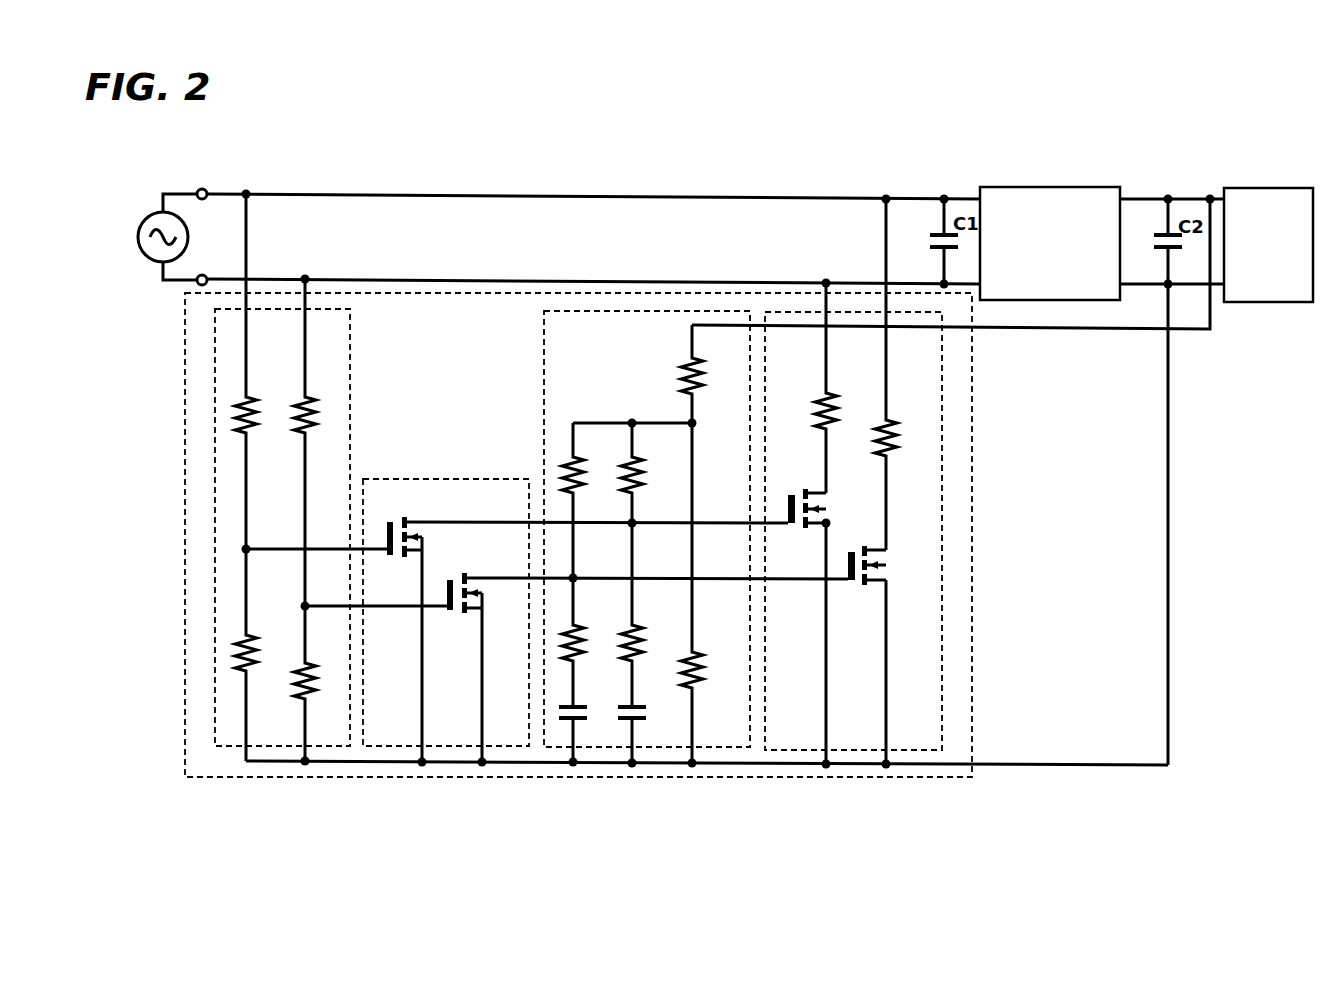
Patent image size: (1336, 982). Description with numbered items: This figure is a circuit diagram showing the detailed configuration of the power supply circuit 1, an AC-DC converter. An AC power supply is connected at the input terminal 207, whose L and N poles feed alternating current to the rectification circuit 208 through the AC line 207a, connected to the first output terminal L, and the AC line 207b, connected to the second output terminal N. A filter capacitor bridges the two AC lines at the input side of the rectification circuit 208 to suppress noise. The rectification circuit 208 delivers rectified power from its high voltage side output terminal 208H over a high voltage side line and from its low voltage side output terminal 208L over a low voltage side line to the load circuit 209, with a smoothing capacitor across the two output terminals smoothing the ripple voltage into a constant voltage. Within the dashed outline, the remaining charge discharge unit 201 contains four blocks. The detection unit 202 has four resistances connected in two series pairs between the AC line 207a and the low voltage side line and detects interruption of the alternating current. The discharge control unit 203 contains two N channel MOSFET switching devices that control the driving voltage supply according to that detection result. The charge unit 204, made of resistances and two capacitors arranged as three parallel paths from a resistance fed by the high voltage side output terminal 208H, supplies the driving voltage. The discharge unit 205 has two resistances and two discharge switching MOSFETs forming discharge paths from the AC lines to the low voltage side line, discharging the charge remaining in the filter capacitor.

The power supply circuit 1 is at (148, 160).
The remaining charge discharge unit 201 is at (225, 776).
The detection unit 202 is at (328, 748).
The discharge control unit 203 is at (508, 749).
The charge unit 204 is at (730, 749).
The discharge unit 205 is at (922, 751).
The input terminal 207 is at (215, 163).
The AC line 207a is at (441, 192).
The AC line 207b is at (491, 278).
The rectification circuit 208 is at (1040, 187).
The high voltage side output terminal 208H is at (1130, 200).
The low voltage side output terminal 208L is at (1145, 288).
The load circuit 209 is at (1280, 188).